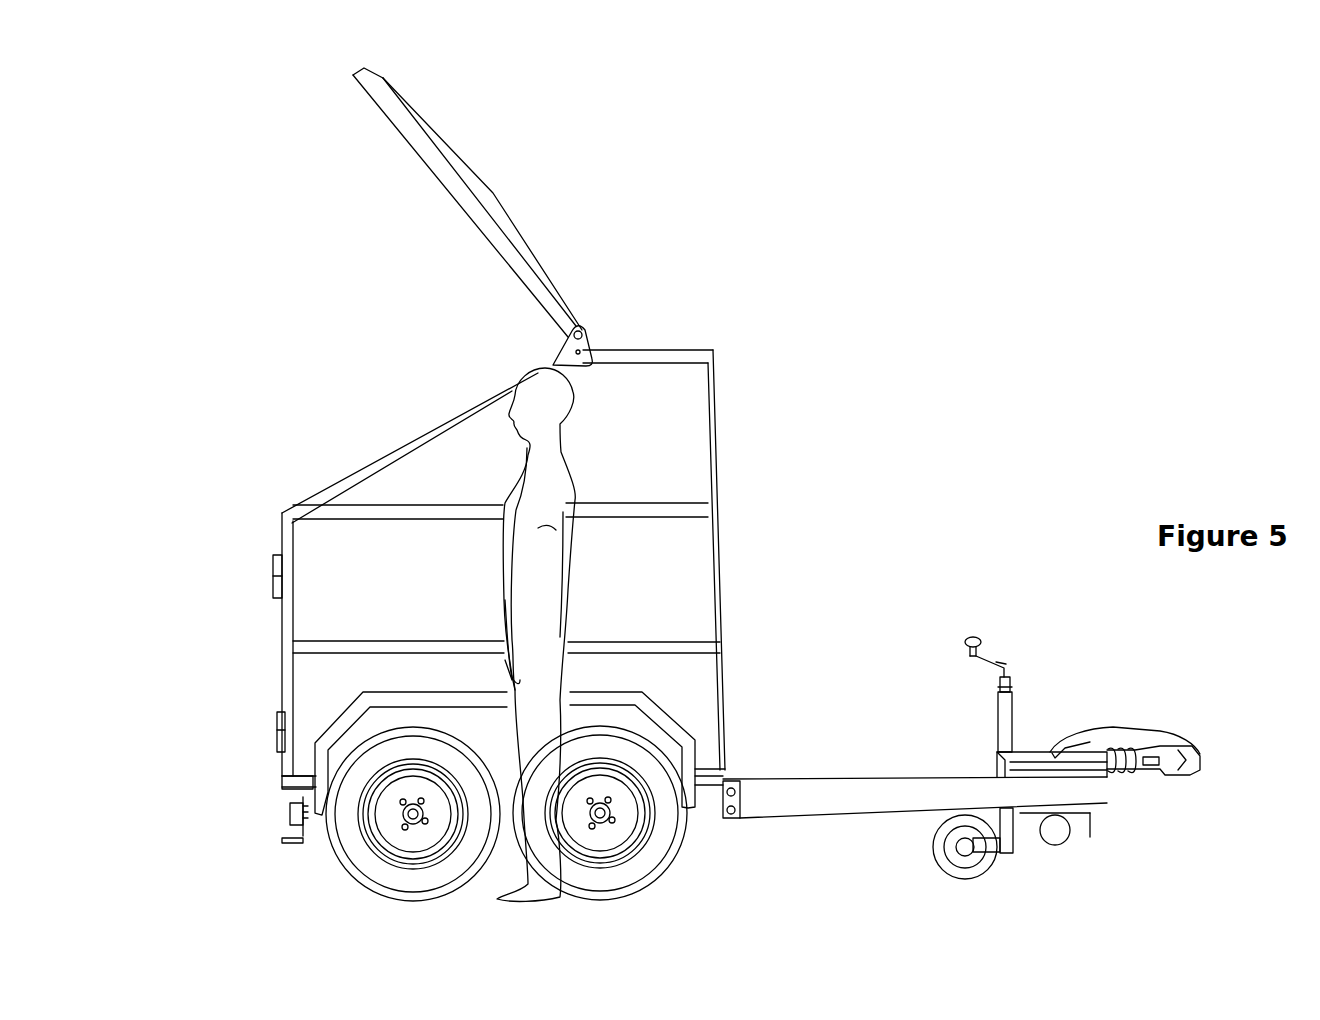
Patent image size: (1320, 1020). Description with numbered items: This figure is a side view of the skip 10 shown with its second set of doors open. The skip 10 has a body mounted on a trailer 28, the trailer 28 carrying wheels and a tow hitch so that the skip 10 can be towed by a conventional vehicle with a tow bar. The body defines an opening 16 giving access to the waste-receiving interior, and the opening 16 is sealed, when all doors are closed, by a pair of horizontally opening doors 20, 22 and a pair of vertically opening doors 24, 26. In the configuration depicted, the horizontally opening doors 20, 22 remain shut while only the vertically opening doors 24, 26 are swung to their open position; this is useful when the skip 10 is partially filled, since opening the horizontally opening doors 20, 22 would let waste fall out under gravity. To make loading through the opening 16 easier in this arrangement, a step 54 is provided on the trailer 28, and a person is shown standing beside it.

The skip 10 is at (757, 328).
The opening 16 is at (452, 413).
The horizontally opening door 20 is at (434, 582).
The horizontally opening door 22 is at (283, 620).
The vertically opening door 24 is at (486, 217).
The vertically opening door 26 is at (518, 231).
The trailer 28 is at (792, 805).
The step 54 is at (277, 785).